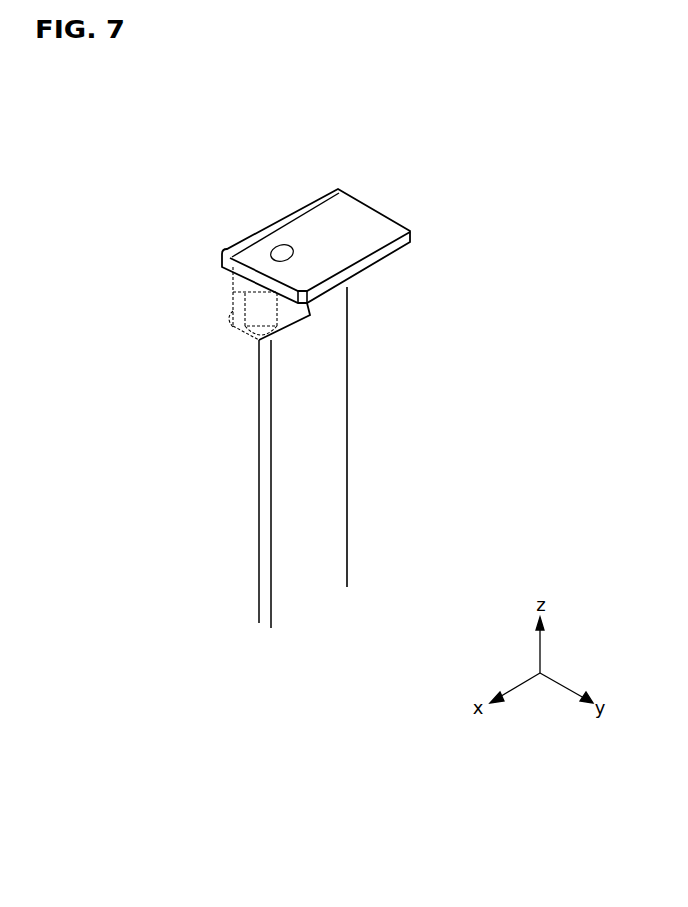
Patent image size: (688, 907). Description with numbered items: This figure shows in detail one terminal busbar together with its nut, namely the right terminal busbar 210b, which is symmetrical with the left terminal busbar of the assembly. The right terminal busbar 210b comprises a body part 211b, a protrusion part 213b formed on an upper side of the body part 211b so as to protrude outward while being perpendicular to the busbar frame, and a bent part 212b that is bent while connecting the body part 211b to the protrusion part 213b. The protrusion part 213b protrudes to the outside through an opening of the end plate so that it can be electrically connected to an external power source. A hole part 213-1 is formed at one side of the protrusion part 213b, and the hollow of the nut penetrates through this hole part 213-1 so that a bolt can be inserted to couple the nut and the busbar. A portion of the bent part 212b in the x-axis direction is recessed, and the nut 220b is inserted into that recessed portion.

The right terminal busbar 210b is at (207, 219).
The body part 211b is at (342, 538).
The bent part 212b is at (348, 303).
The protrusion part 213b is at (347, 222).
The hole part 213-1 is at (282, 245).
The nut 220b is at (230, 325).